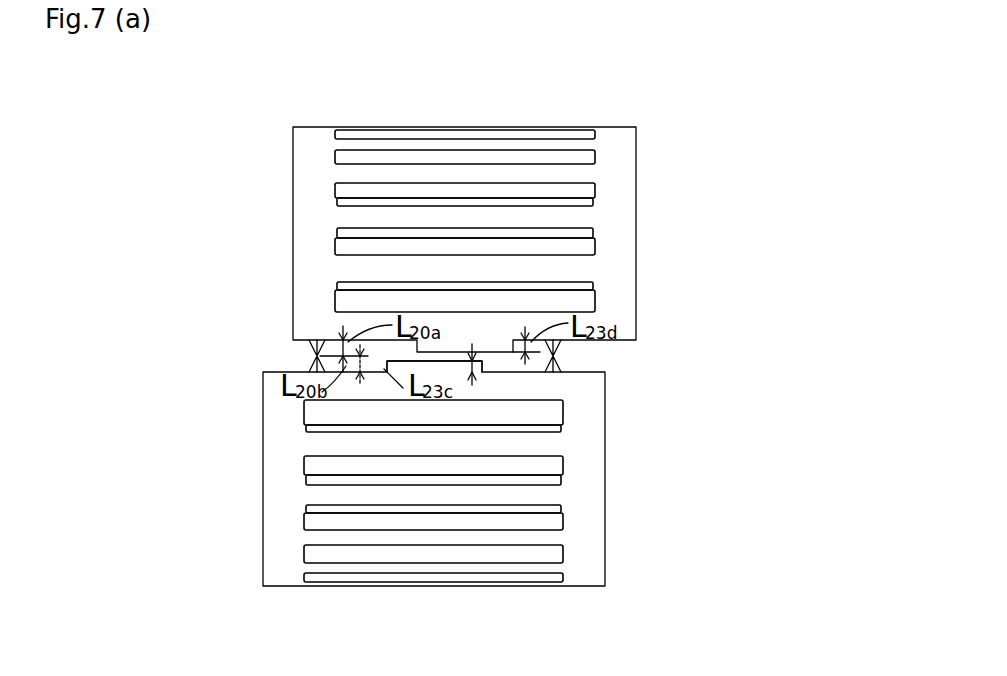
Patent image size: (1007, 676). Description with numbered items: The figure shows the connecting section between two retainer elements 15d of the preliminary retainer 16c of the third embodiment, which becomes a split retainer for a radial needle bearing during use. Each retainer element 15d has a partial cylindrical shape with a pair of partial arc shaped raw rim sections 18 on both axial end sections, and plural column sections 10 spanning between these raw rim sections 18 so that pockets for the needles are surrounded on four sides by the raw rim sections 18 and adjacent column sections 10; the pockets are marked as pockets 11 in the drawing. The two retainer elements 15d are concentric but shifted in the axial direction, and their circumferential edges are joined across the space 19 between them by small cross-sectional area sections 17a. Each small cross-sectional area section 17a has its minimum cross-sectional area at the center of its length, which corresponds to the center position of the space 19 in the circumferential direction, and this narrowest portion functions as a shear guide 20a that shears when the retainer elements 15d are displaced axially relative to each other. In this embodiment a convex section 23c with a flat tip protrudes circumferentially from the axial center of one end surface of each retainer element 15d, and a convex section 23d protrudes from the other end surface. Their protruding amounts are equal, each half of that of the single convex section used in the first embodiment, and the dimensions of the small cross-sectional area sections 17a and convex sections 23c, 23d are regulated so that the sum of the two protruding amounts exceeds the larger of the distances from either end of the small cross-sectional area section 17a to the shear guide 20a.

The column section 10 is at (462, 178).
The slot 11 is at (413, 289).
The retainer element 15d is at (649, 189).
The preliminary retainer 16c is at (651, 143).
The small cross-sectional area section 17a is at (317, 340).
The raw rim section 18 is at (310, 180).
The space 19 is at (536, 364).
The shear guide 20a is at (313, 357).
The convex section 23c is at (388, 363).
The convex section 23d is at (472, 347).